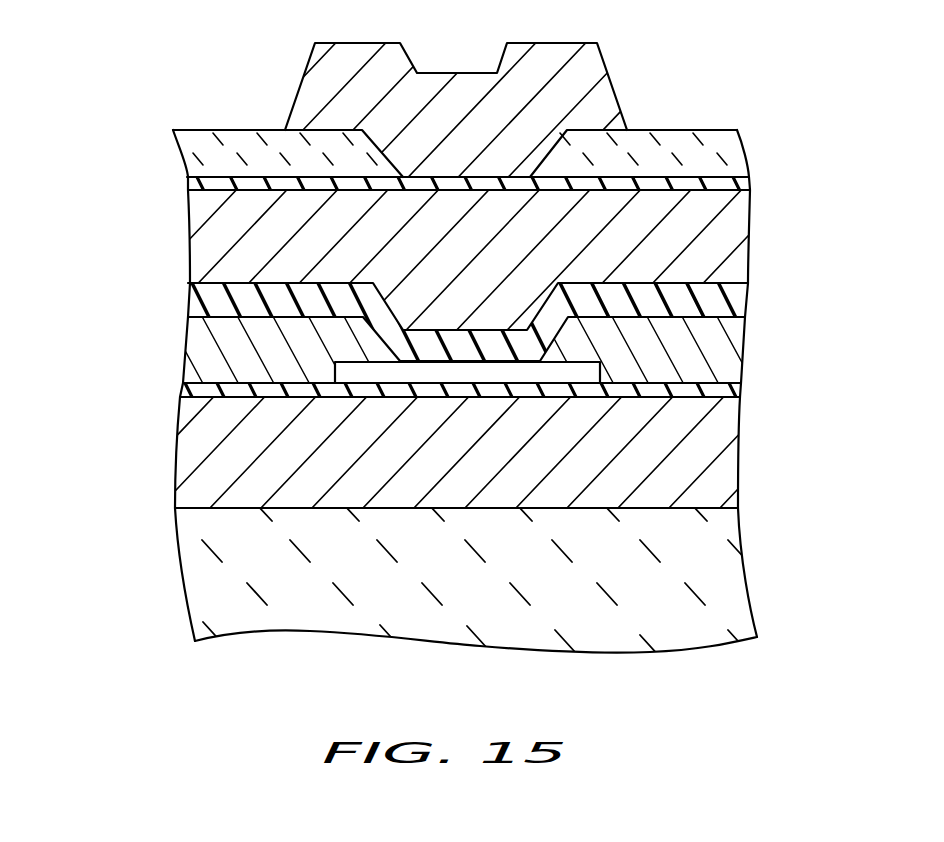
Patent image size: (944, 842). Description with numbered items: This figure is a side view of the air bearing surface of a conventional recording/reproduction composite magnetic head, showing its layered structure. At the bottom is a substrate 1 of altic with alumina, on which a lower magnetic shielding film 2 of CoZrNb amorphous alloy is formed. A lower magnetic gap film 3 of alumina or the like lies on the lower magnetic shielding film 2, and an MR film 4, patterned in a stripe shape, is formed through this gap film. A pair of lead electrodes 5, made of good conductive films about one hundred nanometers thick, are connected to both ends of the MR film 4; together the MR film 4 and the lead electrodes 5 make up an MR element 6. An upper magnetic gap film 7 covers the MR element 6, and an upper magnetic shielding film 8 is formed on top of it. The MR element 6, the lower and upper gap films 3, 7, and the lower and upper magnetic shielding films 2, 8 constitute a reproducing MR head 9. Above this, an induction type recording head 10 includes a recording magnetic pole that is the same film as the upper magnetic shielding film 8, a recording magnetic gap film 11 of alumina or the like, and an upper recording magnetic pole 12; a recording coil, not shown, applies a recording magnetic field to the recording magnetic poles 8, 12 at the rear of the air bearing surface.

The substrate 1 is at (732, 590).
The lower magnetic shielding film 2 is at (472, 447).
The lower magnetic gap film 3 is at (728, 388).
The MR film 4 is at (580, 374).
The lead electrodes 5 is at (203, 358).
The MR element 6 is at (478, 350).
The upper magnetic gap film 7 is at (740, 298).
The upper magnetic shielding film 8 is at (742, 233).
The reproducing MR head 9 is at (501, 353).
The induction type recording head 10 is at (424, 182).
The recording magnetic gap film 11 is at (193, 185).
The upper recording magnetic pole 12 is at (323, 50).